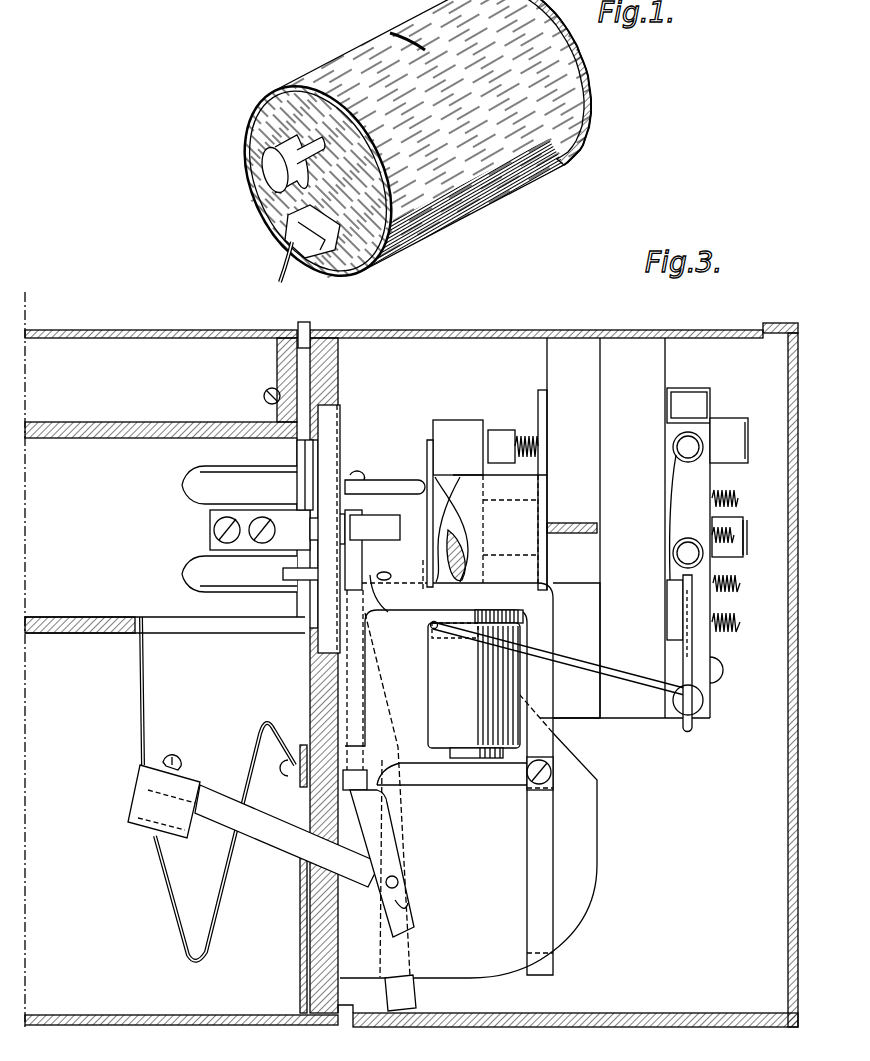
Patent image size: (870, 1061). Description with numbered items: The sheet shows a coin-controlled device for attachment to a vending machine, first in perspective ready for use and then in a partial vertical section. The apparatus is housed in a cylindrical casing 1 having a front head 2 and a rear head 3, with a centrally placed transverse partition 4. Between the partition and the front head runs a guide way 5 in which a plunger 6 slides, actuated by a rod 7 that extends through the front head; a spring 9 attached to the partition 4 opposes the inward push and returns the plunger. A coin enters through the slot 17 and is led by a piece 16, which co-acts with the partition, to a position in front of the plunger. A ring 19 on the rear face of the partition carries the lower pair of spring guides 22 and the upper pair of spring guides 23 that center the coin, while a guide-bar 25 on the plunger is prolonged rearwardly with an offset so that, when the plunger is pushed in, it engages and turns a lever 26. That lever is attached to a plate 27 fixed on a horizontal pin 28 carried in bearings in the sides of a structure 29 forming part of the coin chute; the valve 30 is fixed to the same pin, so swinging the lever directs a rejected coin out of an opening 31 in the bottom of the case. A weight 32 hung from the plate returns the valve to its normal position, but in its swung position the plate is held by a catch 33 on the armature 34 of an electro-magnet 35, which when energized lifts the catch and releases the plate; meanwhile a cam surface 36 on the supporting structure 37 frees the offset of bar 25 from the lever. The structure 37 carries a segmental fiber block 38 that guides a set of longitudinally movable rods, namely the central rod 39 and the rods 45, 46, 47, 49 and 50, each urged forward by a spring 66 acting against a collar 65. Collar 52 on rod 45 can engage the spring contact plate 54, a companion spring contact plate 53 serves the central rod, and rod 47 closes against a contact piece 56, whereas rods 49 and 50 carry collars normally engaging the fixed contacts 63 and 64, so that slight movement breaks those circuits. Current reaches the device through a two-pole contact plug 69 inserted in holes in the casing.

In FIG. 1, the cylindrical casing 1 is at (487, 188).
In FIG. 3, the cylindrical casing 1 is at (536, 331).
In FIG. 1, the front head 2 is at (372, 258).
In FIG. 1, the rear head 3 is at (270, 180).
In FIG. 3, the rear head 3 is at (798, 725).
In FIG. 3, the transverse partition 4 is at (340, 380).
In FIG. 3, the guide way 5 is at (137, 425).
In FIG. 3, the plunger 6 is at (185, 535).
In FIG. 1, the rod 7 is at (313, 146).
In FIG. 3, the spring 9 is at (168, 882).
In FIG. 3, the piece 16 is at (282, 369).
In FIG. 1, the slot 17 is at (389, 32).
In FIG. 3, the slot 17 is at (300, 330).
In FIG. 3, the ring 19 is at (343, 432).
In FIG. 3, the lower pair of spring guides 22 is at (388, 604).
In FIG. 3, the upper pair of spring guides 23 is at (382, 482).
In FIG. 3, the guide-bar 25 is at (384, 519).
In FIG. 3, the lever 26 is at (363, 553).
In FIG. 3, the plate 27 is at (385, 822).
In FIG. 3, the horizontal pin 28 is at (405, 882).
In FIG. 3, the structure 29 is at (598, 868).
In FIG. 3, the valve 30 is at (408, 996).
In FIG. 3, the opening 31 is at (345, 1020).
In FIG. 3, the weight 32 is at (143, 800).
In FIG. 3, the catch 33 is at (372, 768).
In FIG. 3, the armature 34 is at (470, 778).
In FIG. 3, the electro-magnet 35 is at (475, 684).
In FIG. 3, the cam surface 36 is at (455, 480).
In FIG. 3, the supporting structure 37 is at (462, 420).
In FIG. 3, the block 38 is at (660, 365).
In FIG. 3, the rod 39 is at (620, 716).
In FIG. 3, the rod 45 is at (427, 445).
In FIG. 3, the rod 46 is at (741, 584).
In FIG. 3, the rod 47 is at (736, 632).
In FIG. 3, the rod 49 is at (740, 494).
In FIG. 3, the rod 50 is at (748, 546).
In FIG. 3, the metallic collar 52 is at (728, 418).
In FIG. 3, the spring contact plate 53 is at (746, 525).
In FIG. 3, the spring contact plate 54 is at (748, 443).
In FIG. 3, the contact piece 56 is at (710, 695).
In FIG. 3, the fixed contact 63 is at (672, 478).
In FIG. 3, the fixed contact 64 is at (672, 542).
In FIG. 3, the collar 65 is at (501, 430).
In FIG. 3, the spring 66 is at (539, 440).
In FIG. 1, the two-pole contact plug 69 is at (287, 246).